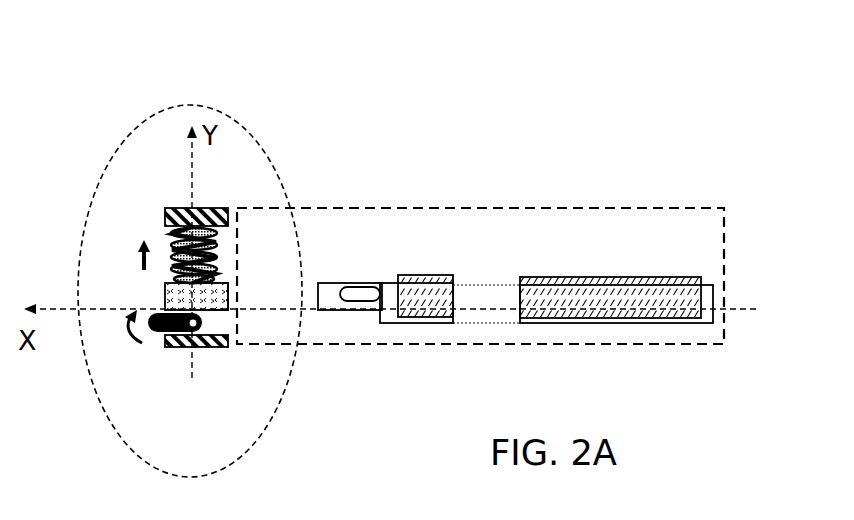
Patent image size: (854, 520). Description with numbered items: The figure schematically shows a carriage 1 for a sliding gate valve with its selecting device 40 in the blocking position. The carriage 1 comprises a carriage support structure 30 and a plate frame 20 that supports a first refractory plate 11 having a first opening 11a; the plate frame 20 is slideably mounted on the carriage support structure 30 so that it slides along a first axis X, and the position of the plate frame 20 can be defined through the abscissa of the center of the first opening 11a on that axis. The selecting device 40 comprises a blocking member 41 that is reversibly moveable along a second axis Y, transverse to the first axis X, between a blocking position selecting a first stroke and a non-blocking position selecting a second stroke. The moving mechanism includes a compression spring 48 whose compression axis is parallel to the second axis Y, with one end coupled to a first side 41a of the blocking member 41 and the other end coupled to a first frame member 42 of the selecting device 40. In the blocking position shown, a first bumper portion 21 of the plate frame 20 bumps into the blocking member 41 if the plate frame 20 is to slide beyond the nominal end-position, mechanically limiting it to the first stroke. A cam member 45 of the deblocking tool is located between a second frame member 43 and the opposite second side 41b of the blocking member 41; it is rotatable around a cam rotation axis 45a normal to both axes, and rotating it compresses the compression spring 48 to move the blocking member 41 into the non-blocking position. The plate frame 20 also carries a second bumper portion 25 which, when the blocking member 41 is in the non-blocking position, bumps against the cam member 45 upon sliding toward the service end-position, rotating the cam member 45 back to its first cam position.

The carriage 1 is at (356, 100).
The first refractory plate 11 is at (620, 290).
The first opening 11a is at (483, 298).
The plate frame 20 is at (685, 325).
The first bumper portion 21 is at (330, 288).
The second bumper portion 25 is at (358, 292).
The carriage support structure 30 is at (724, 232).
The selecting device 40 is at (113, 158).
The blocking member 41 is at (165, 300).
The first side of the blocking member 41a is at (222, 283).
The second side of the blocking member 41b is at (222, 311).
The first frame member 42 is at (178, 208).
The second frame member 43 is at (180, 348).
The cam member 45 is at (158, 333).
The cam rotation axis 45a is at (201, 334).
The compression spring 48 is at (168, 238).